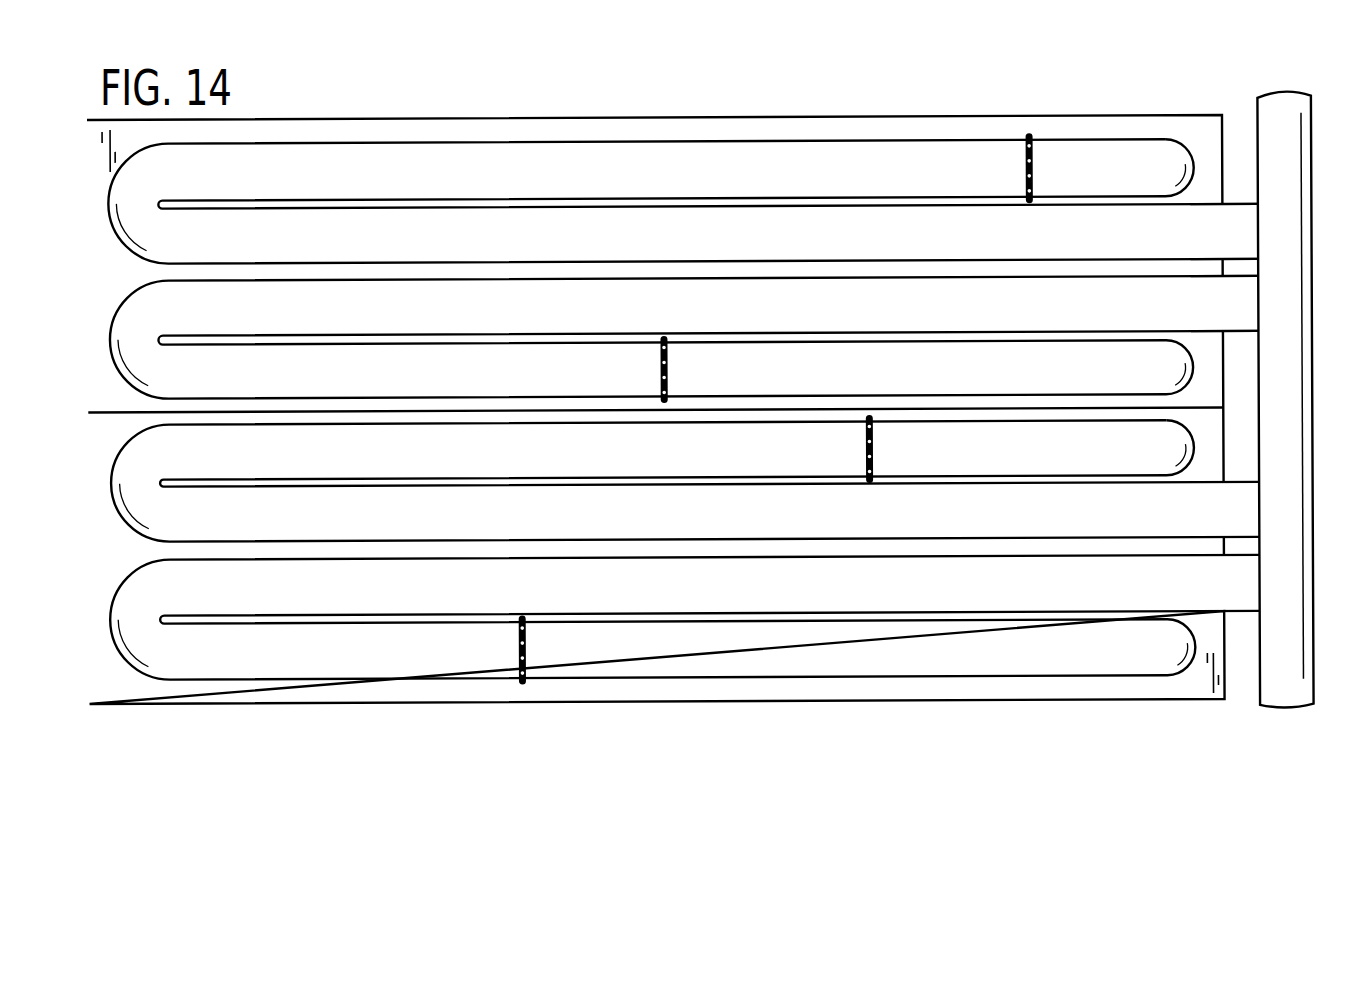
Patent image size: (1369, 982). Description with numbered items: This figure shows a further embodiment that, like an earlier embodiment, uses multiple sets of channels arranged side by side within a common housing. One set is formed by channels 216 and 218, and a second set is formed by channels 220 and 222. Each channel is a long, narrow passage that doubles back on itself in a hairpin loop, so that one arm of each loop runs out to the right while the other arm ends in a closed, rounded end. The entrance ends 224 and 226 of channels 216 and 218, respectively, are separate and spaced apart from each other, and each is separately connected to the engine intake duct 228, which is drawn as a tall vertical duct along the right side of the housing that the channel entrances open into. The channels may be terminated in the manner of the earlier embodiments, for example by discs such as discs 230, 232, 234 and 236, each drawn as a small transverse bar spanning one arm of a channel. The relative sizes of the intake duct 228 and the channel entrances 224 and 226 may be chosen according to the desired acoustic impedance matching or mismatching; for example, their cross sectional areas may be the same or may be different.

The channel 216 is at (998, 248).
The channel 218 is at (1000, 316).
The channel 220 is at (920, 527).
The channel 222 is at (935, 596).
The entrance end 224 is at (1251, 228).
The entrance end 226 is at (1251, 306).
The engine intake duct 228 is at (1297, 141).
The disc 230 is at (1036, 170).
The disc 232 is at (668, 366).
The disc 234 is at (876, 445).
The disc 236 is at (526, 652).